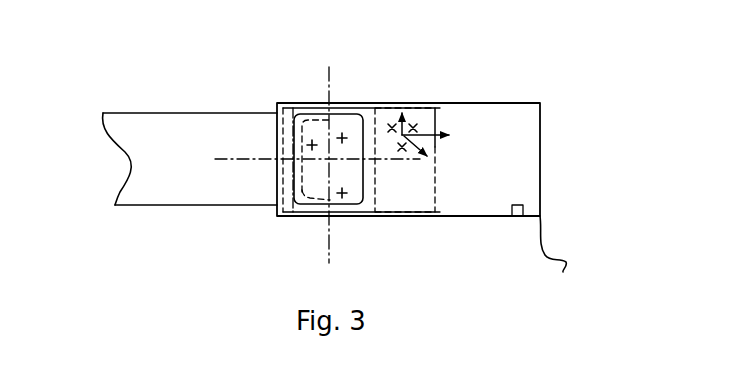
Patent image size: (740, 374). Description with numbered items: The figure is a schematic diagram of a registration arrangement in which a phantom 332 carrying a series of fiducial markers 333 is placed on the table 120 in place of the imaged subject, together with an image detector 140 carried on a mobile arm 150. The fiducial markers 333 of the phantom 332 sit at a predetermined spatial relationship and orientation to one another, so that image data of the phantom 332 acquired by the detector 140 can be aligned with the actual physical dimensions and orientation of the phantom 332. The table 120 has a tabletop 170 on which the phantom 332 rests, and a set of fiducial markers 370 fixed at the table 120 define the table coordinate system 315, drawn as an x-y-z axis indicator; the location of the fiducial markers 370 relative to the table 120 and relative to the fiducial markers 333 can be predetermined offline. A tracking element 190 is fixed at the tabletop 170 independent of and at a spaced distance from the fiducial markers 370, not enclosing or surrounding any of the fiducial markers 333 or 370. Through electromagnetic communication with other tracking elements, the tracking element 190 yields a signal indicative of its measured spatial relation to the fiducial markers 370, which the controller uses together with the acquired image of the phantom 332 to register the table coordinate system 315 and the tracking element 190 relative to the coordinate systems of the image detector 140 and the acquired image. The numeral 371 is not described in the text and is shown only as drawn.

The table 120 is at (387, 237).
The detector 140 is at (290, 180).
The mobile arm 150 is at (150, 112).
The tabletop 170 is at (503, 105).
The tracking element 190 is at (520, 200).
The table coordinate system 315 is at (419, 150).
The phantom 332 is at (383, 114).
The fiducial markers 333 is at (350, 124).
The fiducial markers 370 is at (427, 126).
The axis indicator 371 is at (452, 133).